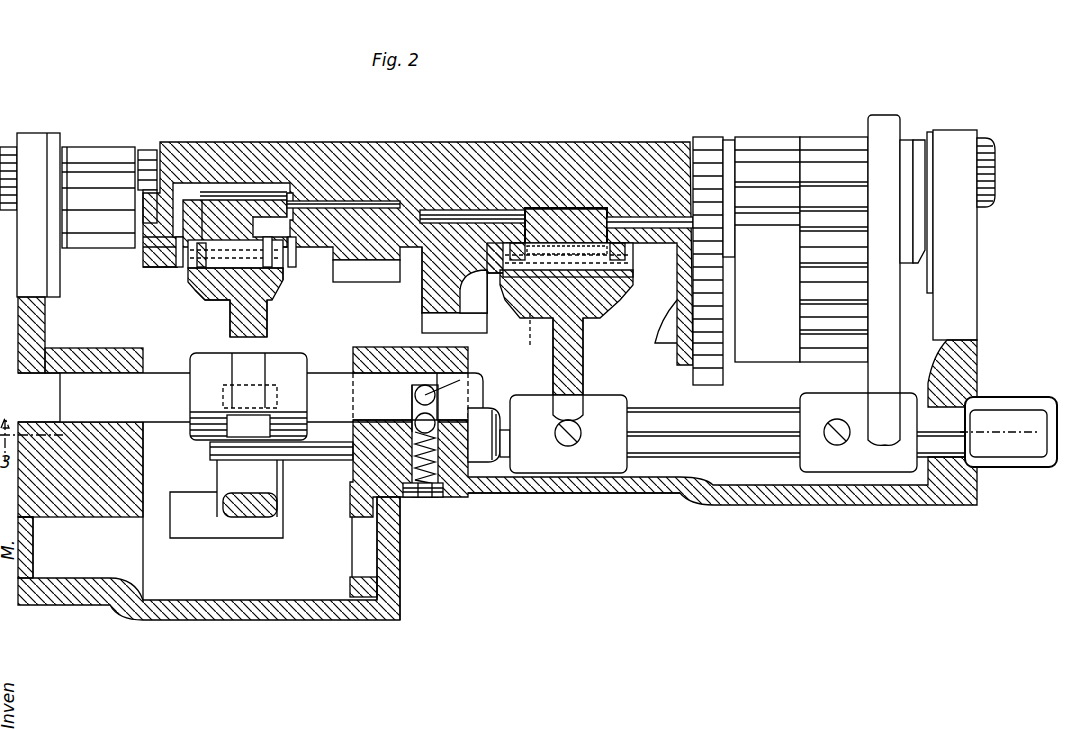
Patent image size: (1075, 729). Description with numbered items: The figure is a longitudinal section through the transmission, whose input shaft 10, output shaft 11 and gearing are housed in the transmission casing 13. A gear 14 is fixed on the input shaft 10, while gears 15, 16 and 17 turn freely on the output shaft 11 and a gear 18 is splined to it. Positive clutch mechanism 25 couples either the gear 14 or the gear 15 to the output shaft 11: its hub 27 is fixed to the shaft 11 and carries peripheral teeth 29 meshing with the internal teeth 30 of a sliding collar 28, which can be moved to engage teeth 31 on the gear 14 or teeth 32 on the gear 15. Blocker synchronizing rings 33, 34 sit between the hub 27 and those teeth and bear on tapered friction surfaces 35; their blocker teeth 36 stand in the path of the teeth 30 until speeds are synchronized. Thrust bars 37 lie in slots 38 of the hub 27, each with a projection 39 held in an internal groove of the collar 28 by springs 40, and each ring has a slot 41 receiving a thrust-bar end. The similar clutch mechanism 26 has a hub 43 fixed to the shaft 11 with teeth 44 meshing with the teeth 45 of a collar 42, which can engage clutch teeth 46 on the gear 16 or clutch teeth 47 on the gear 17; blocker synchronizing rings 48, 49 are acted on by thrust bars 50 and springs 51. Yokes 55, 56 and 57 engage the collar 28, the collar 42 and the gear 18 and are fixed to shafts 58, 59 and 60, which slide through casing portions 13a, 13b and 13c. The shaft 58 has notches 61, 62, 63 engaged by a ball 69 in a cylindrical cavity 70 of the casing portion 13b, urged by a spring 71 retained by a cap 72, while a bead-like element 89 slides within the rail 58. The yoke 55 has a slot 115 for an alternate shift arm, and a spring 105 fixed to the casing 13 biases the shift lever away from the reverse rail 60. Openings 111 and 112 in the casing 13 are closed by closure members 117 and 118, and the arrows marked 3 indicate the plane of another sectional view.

The input shaft 10 is at (8, 147).
The gear 14 is at (97, 162).
The output shaft 11 is at (690, 150).
The positive clutch mechanism 25 is at (242, 185).
The hub 27 is at (260, 240).
The slot 41 is at (183, 220).
The friction surfaces 35 is at (215, 192).
The blocker synchronizing ring 34 is at (305, 201).
The blocker synchronizing ring 33 is at (150, 255).
The teeth 31 is at (160, 265).
The blocker teeth 36 is at (178, 262).
The teeth 30 is at (205, 262).
The springs 40 is at (205, 292).
The slots 38 is at (222, 300).
The projection 39 is at (228, 310).
The thrust bars 37 is at (268, 318).
The collar 28 is at (275, 300).
The teeth 29 is at (278, 282).
The teeth 32 is at (330, 272).
The gear 15 is at (400, 285).
The gear 16 is at (430, 326).
The clutch teeth 46 is at (487, 295).
The teeth 44 is at (530, 333).
The blocker synchronizing ring 48 is at (505, 210).
The springs 51 is at (530, 245).
The positive clutch mechanism 26 is at (572, 198).
The hub 43 is at (587, 218).
The blocker synchronizing ring 49 is at (640, 230).
The teeth 45 is at (620, 290).
The clutch teeth 47 is at (660, 275).
The collar 42 is at (605, 312).
The thrust bars 50 is at (587, 330).
The gear 17 is at (720, 356).
The gear 18 is at (808, 297).
The casing portion 13c is at (938, 392).
The casing portion 13a is at (88, 348).
The shaft 58 is at (70, 388).
The slot 115 is at (215, 458).
The spring 105 is at (200, 530).
The closure member 117 is at (33, 562).
The opening 111 is at (92, 590).
The opening 112 is at (355, 575).
The closure member 118 is at (400, 580).
The casing portion 13b is at (355, 480).
The shaft 60 is at (353, 430).
The yoke 55 is at (300, 358).
The bead-like element 89 is at (455, 378).
The notch 61 is at (395, 420).
The notch 62 is at (415, 400).
The notch 63 is at (470, 400).
The ball 69 is at (412, 440).
The cylindrical cavity 70 is at (410, 497).
The spring 71 is at (423, 498).
The cap 72 is at (436, 497).
The shaft 59 is at (508, 465).
The yoke 56 is at (605, 475).
The transmission casing 13 is at (760, 505).
The yoke 57 is at (887, 475).
The sleeve 3 is at (1030, 440).